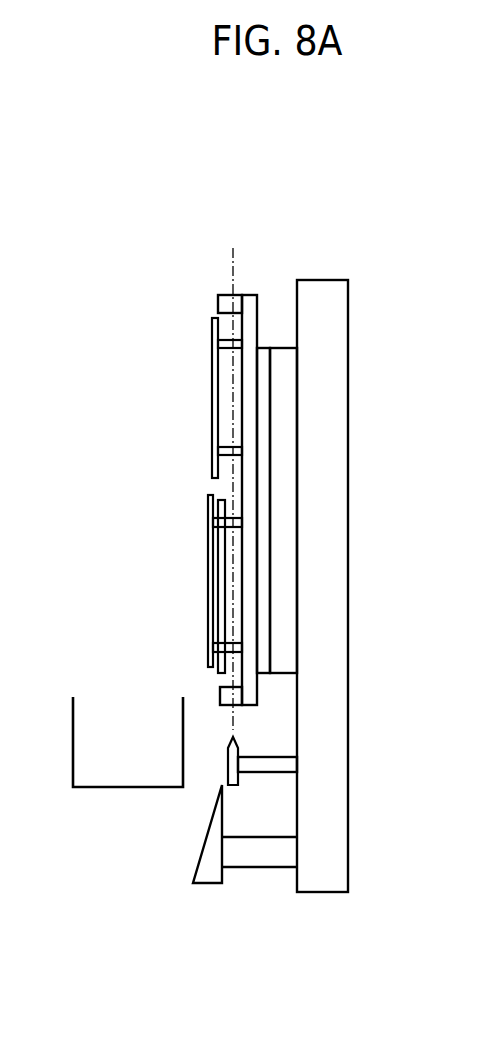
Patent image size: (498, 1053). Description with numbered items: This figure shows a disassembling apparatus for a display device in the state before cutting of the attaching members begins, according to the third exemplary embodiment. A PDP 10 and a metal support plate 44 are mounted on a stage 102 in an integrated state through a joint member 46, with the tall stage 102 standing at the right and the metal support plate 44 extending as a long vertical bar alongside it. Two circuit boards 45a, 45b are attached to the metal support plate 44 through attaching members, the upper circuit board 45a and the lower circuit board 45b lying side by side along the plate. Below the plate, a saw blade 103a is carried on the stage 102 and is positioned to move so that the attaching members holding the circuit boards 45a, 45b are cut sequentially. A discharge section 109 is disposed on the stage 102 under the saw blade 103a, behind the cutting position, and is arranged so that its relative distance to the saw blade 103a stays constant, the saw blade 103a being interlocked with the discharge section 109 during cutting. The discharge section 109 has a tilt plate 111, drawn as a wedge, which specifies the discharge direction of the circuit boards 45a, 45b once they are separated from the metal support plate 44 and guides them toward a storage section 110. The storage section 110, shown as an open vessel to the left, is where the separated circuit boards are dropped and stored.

The PDP 10 is at (285, 417).
The metal support plate 44 is at (247, 312).
The circuit board 45a is at (210, 348).
The circuit board 45b is at (212, 563).
The joint member 46 is at (262, 348).
The stage 102 is at (332, 505).
The saw blade 103a is at (233, 758).
The discharge section 109 is at (212, 858).
The storage section 110 is at (72, 728).
The tilt plate 111 is at (205, 840).